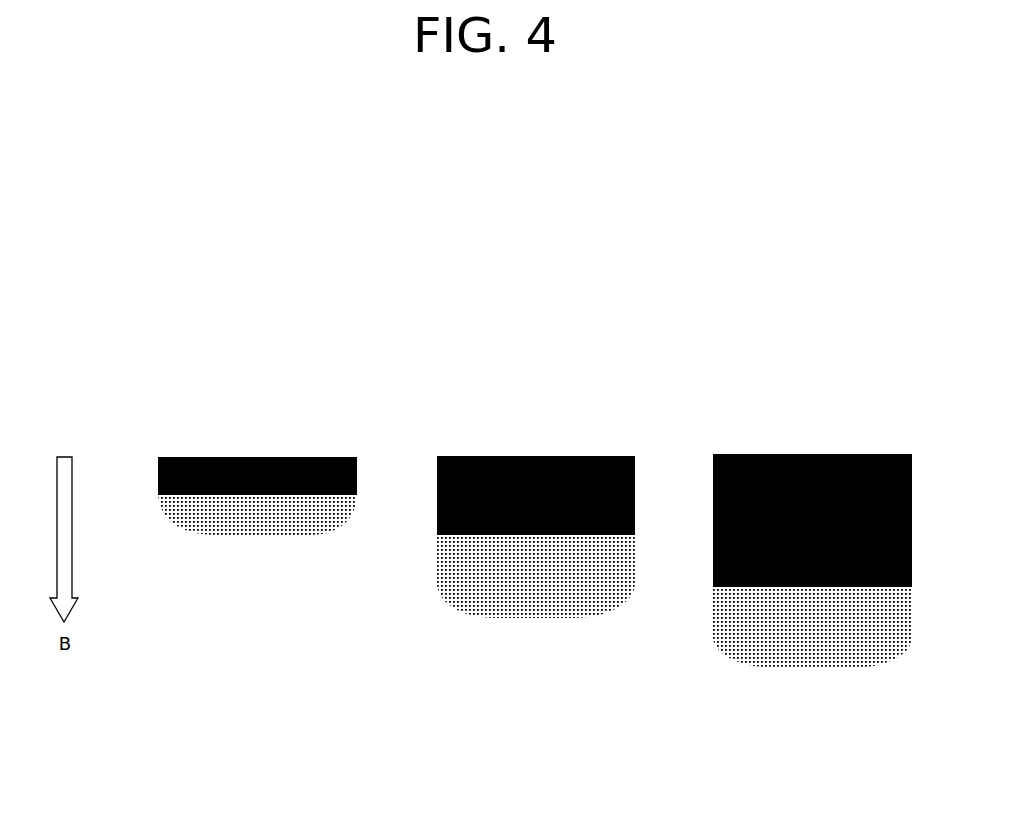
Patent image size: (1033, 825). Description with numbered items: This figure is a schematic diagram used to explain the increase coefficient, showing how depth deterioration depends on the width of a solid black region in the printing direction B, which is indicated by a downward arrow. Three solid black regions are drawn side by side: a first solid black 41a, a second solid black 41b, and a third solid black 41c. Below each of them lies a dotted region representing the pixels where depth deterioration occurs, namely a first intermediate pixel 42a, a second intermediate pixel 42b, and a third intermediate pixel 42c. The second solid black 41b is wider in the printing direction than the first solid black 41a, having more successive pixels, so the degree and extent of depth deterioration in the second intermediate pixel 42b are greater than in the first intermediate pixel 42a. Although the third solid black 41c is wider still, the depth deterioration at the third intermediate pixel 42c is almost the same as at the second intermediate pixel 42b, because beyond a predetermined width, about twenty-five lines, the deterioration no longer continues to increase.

The first solid black 41a is at (250, 456).
The first intermediate pixel 42a is at (253, 534).
The second solid black 41b is at (530, 456).
The second intermediate pixel 42b is at (538, 618).
The third solid black 41c is at (810, 454).
The third intermediate pixel 42c is at (815, 668).